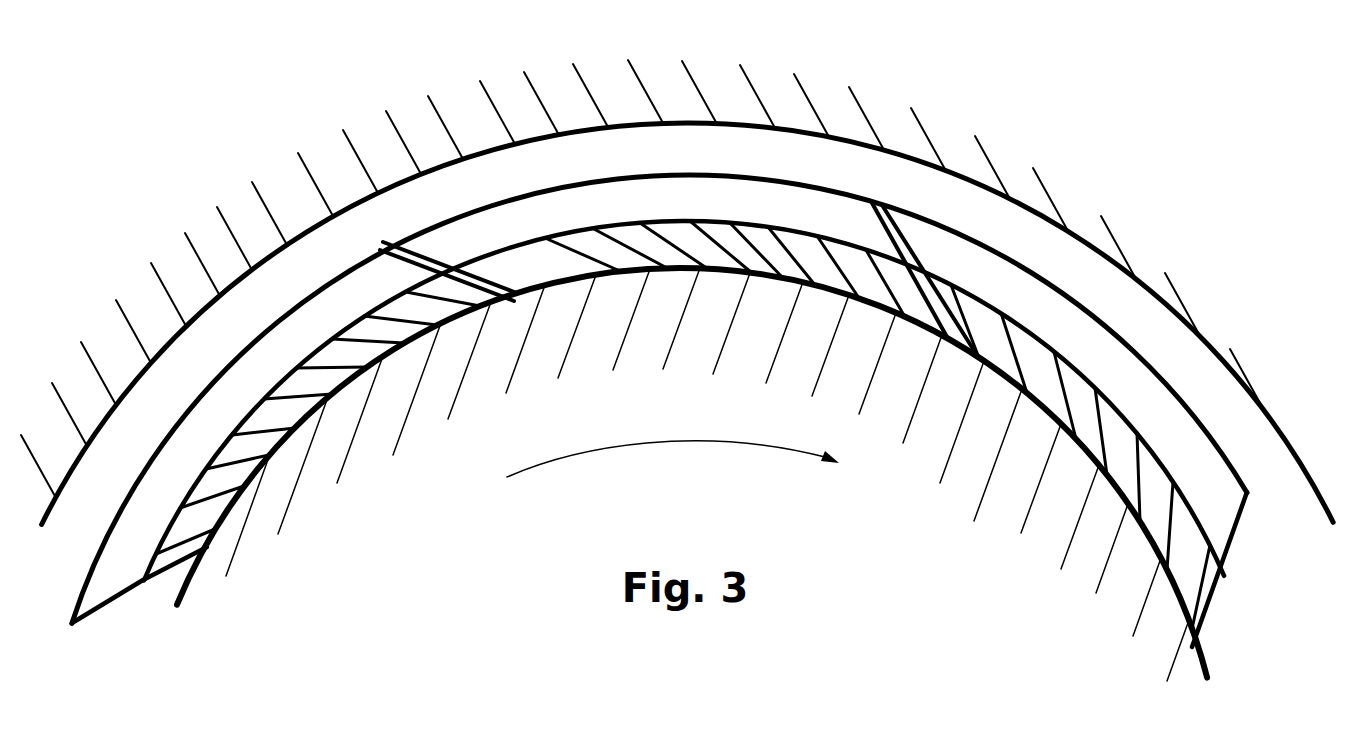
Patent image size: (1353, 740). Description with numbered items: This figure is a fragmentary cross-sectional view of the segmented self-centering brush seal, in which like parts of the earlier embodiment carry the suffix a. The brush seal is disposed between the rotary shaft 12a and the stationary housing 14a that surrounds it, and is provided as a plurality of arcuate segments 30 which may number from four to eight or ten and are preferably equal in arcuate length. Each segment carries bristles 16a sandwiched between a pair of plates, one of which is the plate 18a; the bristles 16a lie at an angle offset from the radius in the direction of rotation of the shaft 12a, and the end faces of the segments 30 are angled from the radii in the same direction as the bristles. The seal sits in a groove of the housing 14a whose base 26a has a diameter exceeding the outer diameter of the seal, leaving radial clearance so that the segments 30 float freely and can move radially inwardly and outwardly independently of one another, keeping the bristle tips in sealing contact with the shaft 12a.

The base of the groove 26a is at (547, 135).
The arcuate segments 30 is at (445, 232).
The housing 14a is at (272, 238).
The plate 18a is at (300, 337).
The bristles 16a is at (293, 398).
The shaft 12a is at (1010, 377).